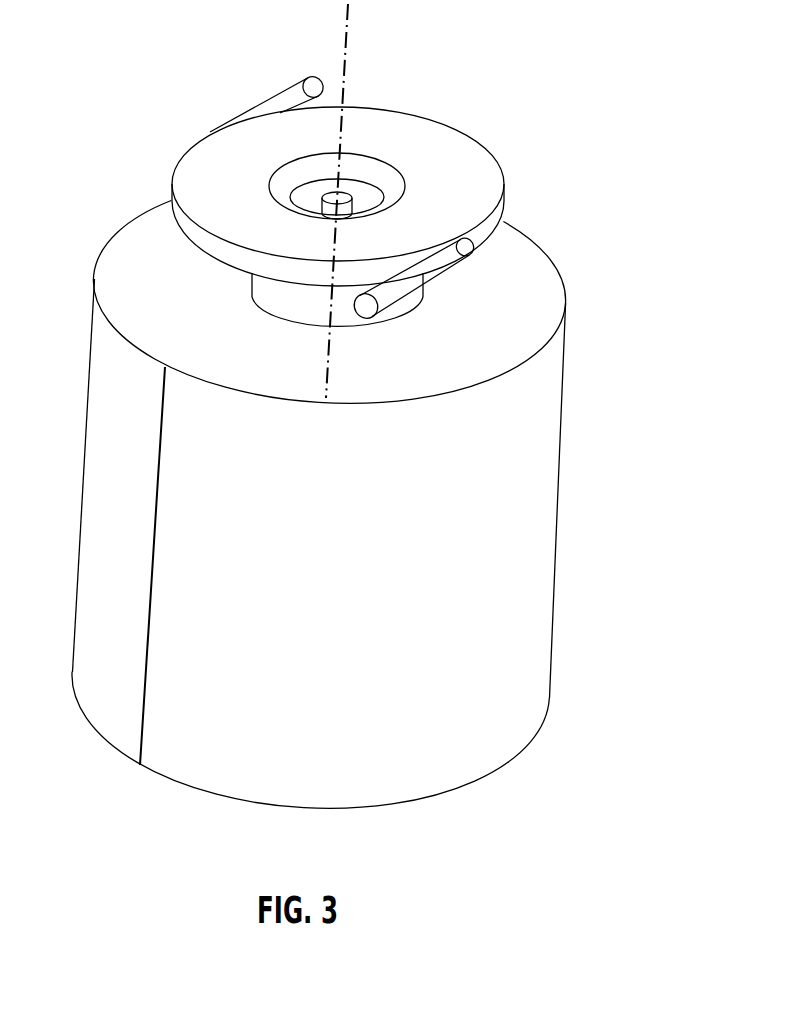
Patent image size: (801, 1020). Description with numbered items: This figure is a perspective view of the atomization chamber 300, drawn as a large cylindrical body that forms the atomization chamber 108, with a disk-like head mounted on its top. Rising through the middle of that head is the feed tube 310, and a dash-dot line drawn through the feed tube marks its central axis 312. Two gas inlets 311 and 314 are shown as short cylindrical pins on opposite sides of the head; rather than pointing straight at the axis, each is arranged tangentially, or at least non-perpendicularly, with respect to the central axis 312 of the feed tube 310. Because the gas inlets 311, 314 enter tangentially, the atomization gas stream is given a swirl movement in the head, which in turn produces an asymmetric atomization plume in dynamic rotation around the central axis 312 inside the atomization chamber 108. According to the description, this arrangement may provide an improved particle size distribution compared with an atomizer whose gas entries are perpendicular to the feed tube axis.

The atomization chamber 300 is at (672, 92).
The atomization chamber 108 is at (555, 482).
The feed tube 310 is at (356, 200).
The gas inlet 311 is at (440, 278).
The central axis 312 is at (347, 44).
The gas inlet 314 is at (291, 90).